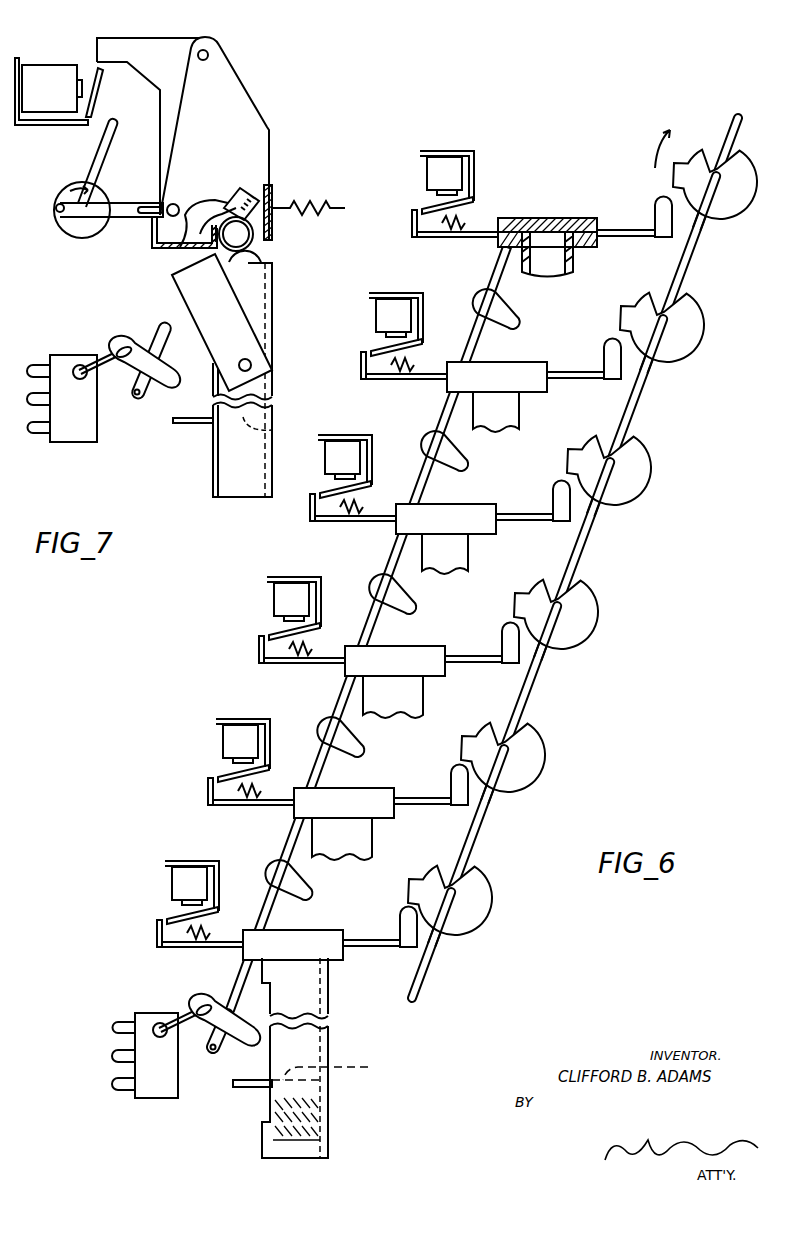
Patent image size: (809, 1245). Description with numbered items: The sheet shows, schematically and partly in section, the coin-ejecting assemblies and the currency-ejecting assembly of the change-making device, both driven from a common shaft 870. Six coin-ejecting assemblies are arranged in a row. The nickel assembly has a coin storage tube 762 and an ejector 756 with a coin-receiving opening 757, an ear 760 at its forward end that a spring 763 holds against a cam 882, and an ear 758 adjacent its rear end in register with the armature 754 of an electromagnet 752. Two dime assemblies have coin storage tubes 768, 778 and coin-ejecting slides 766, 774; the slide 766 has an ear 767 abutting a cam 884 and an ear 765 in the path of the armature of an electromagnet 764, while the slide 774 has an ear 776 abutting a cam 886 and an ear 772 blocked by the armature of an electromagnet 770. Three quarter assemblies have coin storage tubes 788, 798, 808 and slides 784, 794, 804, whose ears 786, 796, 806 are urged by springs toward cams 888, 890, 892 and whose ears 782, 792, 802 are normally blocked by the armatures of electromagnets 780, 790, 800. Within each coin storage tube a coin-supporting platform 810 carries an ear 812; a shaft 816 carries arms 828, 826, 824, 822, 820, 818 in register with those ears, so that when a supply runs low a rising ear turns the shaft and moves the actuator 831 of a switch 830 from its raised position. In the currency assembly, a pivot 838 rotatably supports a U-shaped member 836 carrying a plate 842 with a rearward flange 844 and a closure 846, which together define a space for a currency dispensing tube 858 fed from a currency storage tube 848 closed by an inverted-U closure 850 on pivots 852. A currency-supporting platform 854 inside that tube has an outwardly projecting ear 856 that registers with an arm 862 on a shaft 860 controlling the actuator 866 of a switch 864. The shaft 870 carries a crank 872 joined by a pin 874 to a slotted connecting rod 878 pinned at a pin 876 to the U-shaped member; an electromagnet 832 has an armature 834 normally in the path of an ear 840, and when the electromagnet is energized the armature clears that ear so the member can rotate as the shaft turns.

In FIG. 6, the electromagnet 752 is at (427, 176).
In FIG. 6, the armature 754 is at (423, 199).
In FIG. 6, the ejector 756 is at (457, 244).
In FIG. 6, the coin-receiving opening 757 is at (547, 213).
In FIG. 6, the ear 758 is at (389, 225).
In FIG. 6, the ear 760 is at (635, 207).
In FIG. 6, the coin storage tube 762 is at (574, 254).
In FIG. 6, the spring 763 is at (360, 553).
In FIG. 6, the electromagnet 764 is at (376, 324).
In FIG. 6, the ear 765 is at (348, 353).
In FIG. 6, the coin-ejecting slide 766 is at (406, 389).
In FIG. 6, the ear 767 is at (584, 352).
In FIG. 6, the coin storage tube 768 is at (523, 412).
In FIG. 6, the electromagnet 770 is at (326, 466).
In FIG. 6, the ear 772 is at (284, 514).
In FIG. 6, the coin-ejecting slide 774 is at (355, 531).
In FIG. 6, the ear 776 is at (533, 494).
In FIG. 6, the coin storage tube 778 is at (471, 554).
In FIG. 6, the electromagnet 780 is at (275, 608).
In FIG. 6, the ear 782 is at (233, 649).
In FIG. 6, the coin-ejecting slide 784 is at (304, 673).
In FIG. 6, the ear 786 is at (482, 636).
In FIG. 6, the coin storage tube 788 is at (424, 697).
In FIG. 6, the electromagnet 790 is at (224, 750).
In FIG. 6, the ear 792 is at (178, 791).
In FIG. 6, the coin-ejecting slide 794 is at (253, 815).
In FIG. 6, the ear 796 is at (431, 781).
In FIG. 6, the coin storage tube 798 is at (369, 839).
In FIG. 6, the electromagnet 800 is at (169, 892).
In FIG. 6, the ear 802 is at (133, 933).
In FIG. 6, the coin-ejecting slide 804 is at (202, 954).
In FIG. 6, the ear 806 is at (380, 921).
In FIG. 6, the coin storage tube 808 is at (332, 1024).
In FIG. 6, the coin-supporting platform 810 is at (337, 1069).
In FIG. 6, the ear 812 is at (252, 1090).
In FIG. 6, the shaft 816 is at (210, 1052).
In FIG. 6, the arm 818 is at (225, 1045).
In FIG. 6, the arm 820 is at (308, 880).
In FIG. 6, the arm 822 is at (363, 737).
In FIG. 6, the arm 824 is at (412, 594).
In FIG. 6, the arm 826 is at (467, 451).
In FIG. 6, the arm 828 is at (518, 309).
In FIG. 6, the switch 830 is at (164, 1098).
In FIG. 6, the actuator 831 is at (184, 1002).
In FIG. 7, the electromagnet 832 is at (77, 62).
In FIG. 7, the armature 834 is at (97, 100).
In FIG. 7, the U-shaped member 836 is at (243, 116).
In FIG. 7, the pivot 838 is at (210, 55).
In FIG. 7, the ear 840 is at (118, 60).
In FIG. 7, the plate 842 is at (272, 190).
In FIG. 7, the flange 844 is at (197, 195).
In FIG. 7, the closure 846 is at (165, 248).
In FIG. 7, the currency storage tube 848 is at (273, 395).
In FIG. 7, the closure 850 is at (178, 283).
In FIG. 7, the pivot 852 is at (252, 363).
In FIG. 7, the currency-supporting platform 854 is at (274, 425).
In FIG. 7, the ear 856 is at (192, 424).
In FIG. 7, the currency dispensing tube 858 is at (258, 253).
In FIG. 7, the shaft 860 is at (135, 400).
In FIG. 7, the arm 862 is at (168, 343).
In FIG. 7, the switch 864 is at (74, 442).
In FIG. 7, the actuator 866 is at (110, 345).
In FIG. 7, the shaft 870 is at (102, 143).
In FIG. 6, the shaft 870 is at (426, 966).
In FIG. 7, the crank 872 is at (88, 226).
In FIG. 7, the pin 874 is at (56, 210).
In FIG. 7, the pin 876 is at (168, 204).
In FIG. 7, the slotted connecting rod 878 is at (113, 203).
In FIG. 6, the cam 882 is at (717, 197).
In FIG. 6, the cam 884 is at (685, 333).
In FIG. 6, the cam 886 is at (639, 476).
In FIG. 6, the cam 888 is at (590, 620).
In FIG. 6, the cam 890 is at (537, 763).
In FIG. 6, the cam 892 is at (482, 906).